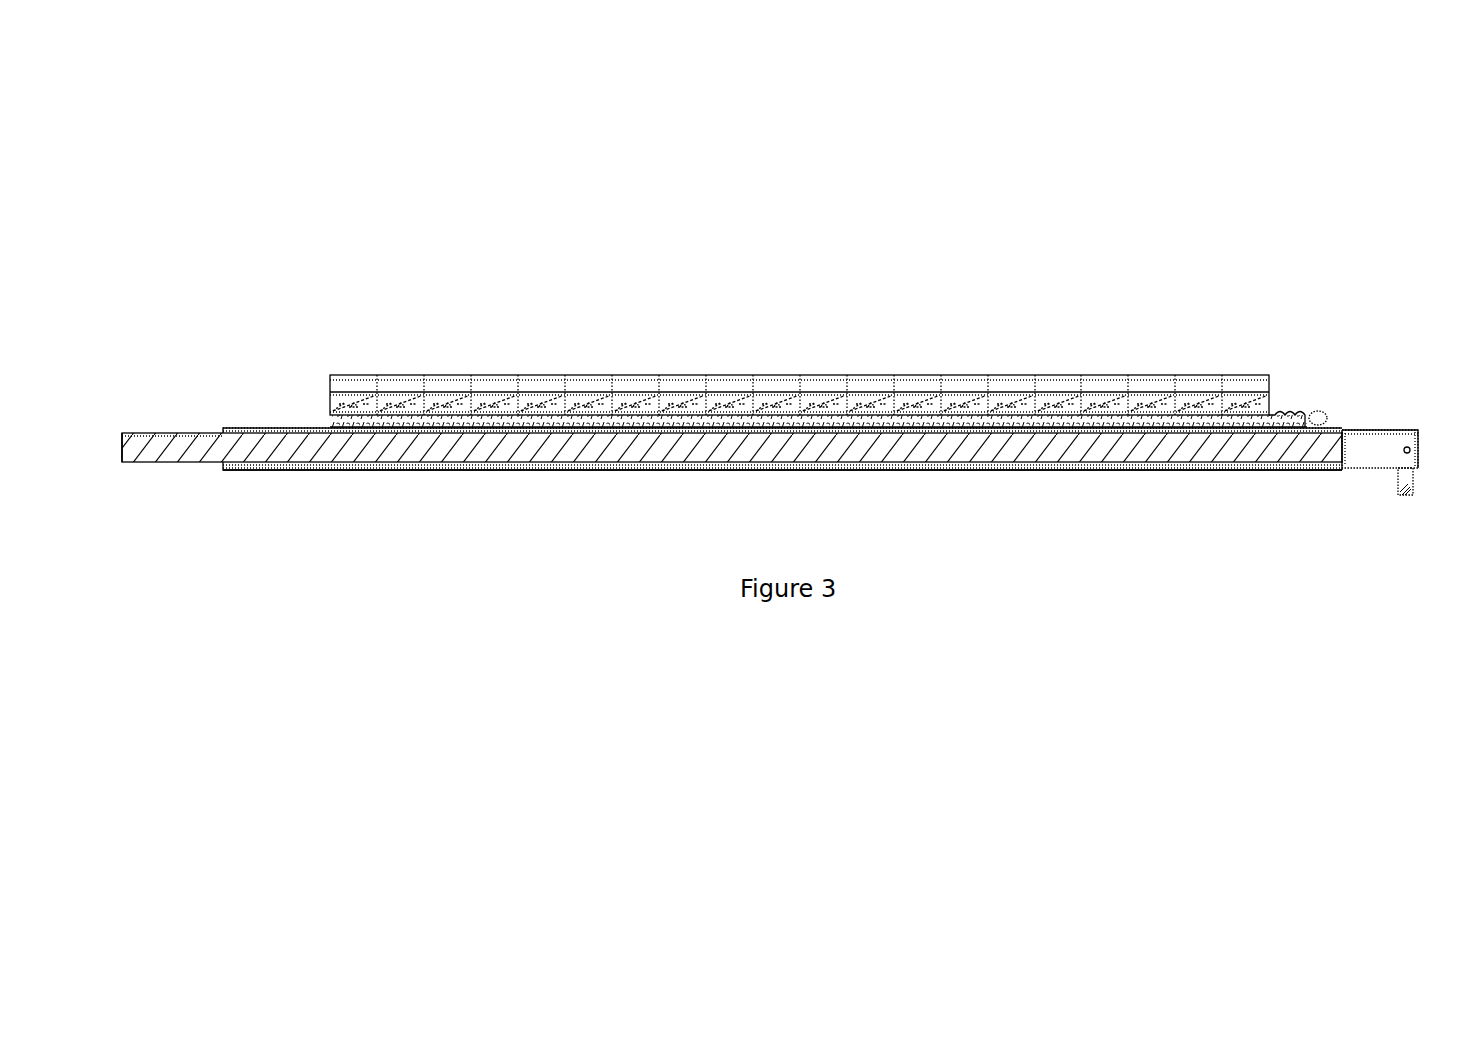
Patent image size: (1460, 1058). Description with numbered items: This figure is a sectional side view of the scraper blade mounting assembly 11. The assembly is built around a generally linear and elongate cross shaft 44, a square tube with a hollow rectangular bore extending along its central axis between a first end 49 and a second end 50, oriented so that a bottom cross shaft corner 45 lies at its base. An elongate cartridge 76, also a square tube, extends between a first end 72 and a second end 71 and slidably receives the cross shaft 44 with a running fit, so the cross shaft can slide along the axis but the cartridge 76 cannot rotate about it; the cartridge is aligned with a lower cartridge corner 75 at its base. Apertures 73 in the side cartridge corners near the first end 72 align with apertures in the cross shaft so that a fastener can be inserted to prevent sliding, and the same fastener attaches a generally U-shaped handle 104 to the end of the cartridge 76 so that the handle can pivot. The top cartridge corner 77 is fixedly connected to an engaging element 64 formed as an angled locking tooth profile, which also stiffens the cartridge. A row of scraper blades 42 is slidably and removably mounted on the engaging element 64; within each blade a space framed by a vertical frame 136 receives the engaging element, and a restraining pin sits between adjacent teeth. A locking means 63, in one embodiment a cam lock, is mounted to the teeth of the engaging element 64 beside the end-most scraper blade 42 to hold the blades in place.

The scraper blade mounting assembly 11 is at (942, 503).
The scraper blade 42 is at (402, 390).
The vertical frame 136 is at (407, 413).
The engaging element 64 is at (345, 427).
The locking means 63 is at (1322, 410).
The first end 49 is at (123, 445).
The second end 71 is at (225, 467).
The lower cartridge corner 75 is at (1092, 472).
The bottom cross shaft corner 45 is at (1140, 463).
The cross shaft 44 is at (1307, 455).
The second end 50 is at (1342, 450).
The top cartridge corner 77 is at (1363, 430).
The first end 72 is at (1418, 430).
The cartridge 76 is at (1385, 427).
The aperture 73 is at (1409, 453).
The handle 104 is at (1410, 492).